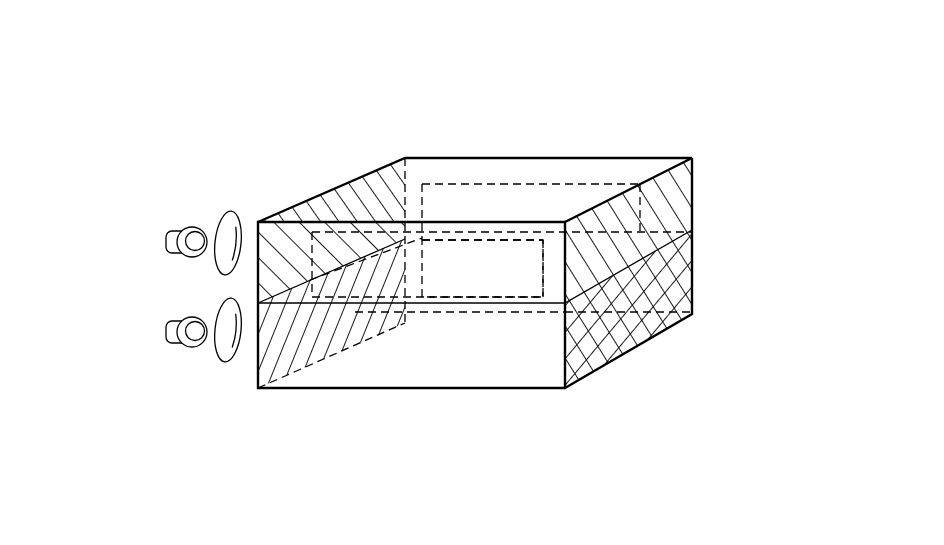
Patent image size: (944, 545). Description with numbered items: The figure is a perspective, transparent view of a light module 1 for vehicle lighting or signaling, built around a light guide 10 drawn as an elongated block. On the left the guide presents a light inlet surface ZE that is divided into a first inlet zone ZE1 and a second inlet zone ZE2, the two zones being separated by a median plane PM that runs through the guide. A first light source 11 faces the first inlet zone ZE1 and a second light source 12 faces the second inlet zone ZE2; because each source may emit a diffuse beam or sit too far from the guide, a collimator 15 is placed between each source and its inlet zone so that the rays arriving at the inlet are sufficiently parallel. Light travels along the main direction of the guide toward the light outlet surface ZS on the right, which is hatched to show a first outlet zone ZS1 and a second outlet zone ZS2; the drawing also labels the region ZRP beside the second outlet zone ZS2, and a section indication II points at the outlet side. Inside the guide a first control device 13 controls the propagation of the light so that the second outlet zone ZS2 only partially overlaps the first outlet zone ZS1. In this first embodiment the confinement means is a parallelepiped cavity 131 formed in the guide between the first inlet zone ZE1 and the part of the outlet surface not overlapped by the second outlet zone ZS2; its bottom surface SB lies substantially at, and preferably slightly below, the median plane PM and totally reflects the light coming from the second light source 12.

The light module 1 is at (474, 106).
The light guide 10 is at (423, 156).
The first light source 11 is at (160, 231).
The second light source 12 is at (160, 322).
The first control device 13 is at (539, 181).
The cavity 131 is at (482, 268).
The collimator 15 is at (238, 216).
The light inlet surface ZE is at (289, 172).
The first inlet zone ZE1 is at (356, 188).
The second inlet zone ZE2 is at (262, 366).
The light outlet surface ZS is at (720, 247).
The first outlet zone ZS1 is at (667, 212).
The second outlet zone ZS2 is at (628, 309).
The reflection zone ZRP is at (646, 340).
The median plane PM is at (441, 314).
The bottom surface SB is at (497, 268).
The section line II is at (720, 318).